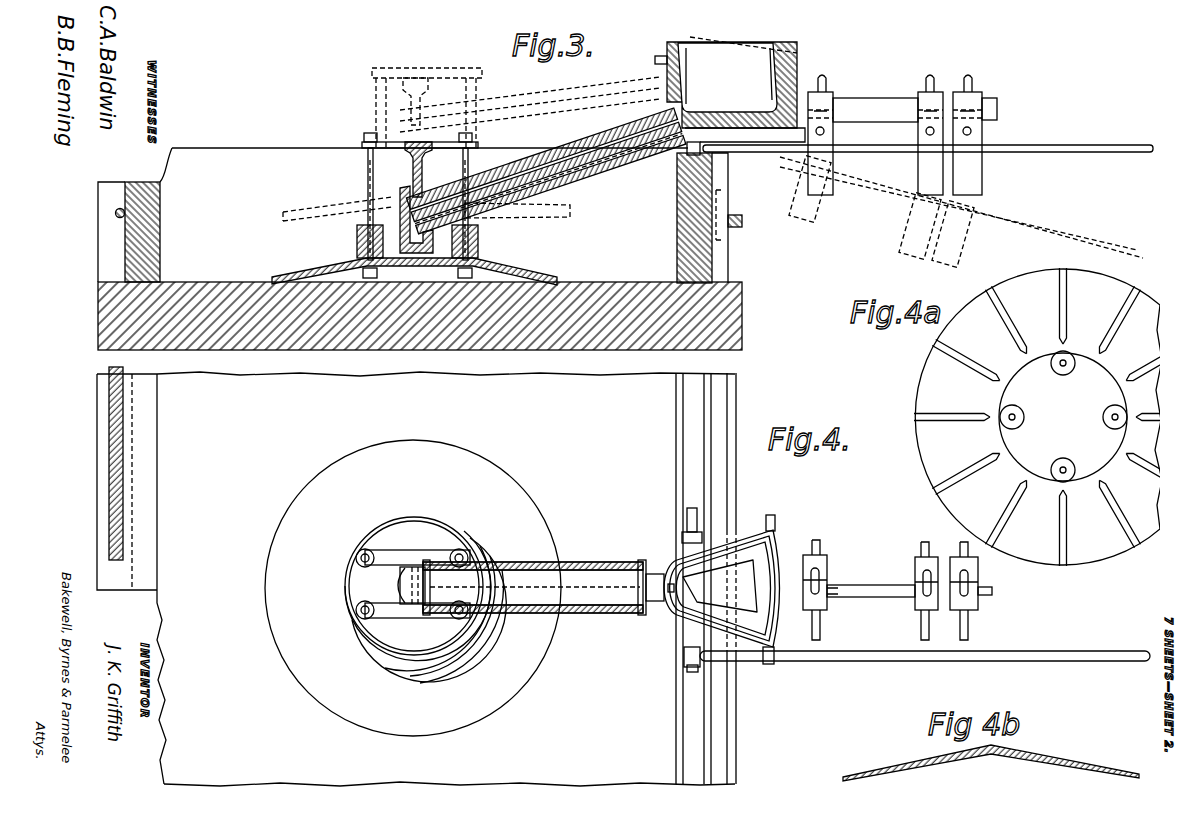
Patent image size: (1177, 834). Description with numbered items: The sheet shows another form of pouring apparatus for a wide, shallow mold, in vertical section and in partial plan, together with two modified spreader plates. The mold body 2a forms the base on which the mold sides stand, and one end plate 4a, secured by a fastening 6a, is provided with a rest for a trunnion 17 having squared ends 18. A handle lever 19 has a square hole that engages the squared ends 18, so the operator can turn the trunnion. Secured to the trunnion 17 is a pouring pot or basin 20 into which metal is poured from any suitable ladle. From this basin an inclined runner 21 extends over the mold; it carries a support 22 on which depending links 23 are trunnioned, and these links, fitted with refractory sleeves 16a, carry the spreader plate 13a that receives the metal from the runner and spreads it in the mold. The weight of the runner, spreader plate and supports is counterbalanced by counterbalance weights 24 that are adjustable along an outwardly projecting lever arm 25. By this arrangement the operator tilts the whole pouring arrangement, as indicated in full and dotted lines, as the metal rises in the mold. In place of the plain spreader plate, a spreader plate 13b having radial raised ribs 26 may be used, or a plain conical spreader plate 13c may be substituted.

In FIG. 3, the base frame 2a is at (433, 330).
In FIG. 4, the base frame 2a is at (446, 579).
In FIG. 3, the end plate 4a is at (125, 242).
In FIG. 4, the end plate 4a is at (130, 483).
In FIG. 3, the fastening screw 6a is at (116, 214).
In FIG. 4, the fastening screw 6a is at (116, 452).
In FIG. 3, the spreader plate 13a is at (512, 277).
In FIG. 4, the spreader plate 13a is at (413, 588).
In FIG. 4A, the grooved disk 13b is at (1038, 417).
In FIG. 4B, the plain conical spreader plate 13c is at (1050, 758).
In FIG. 3, the refractory sleeves 16a is at (357, 242).
In FIG. 4, the refractory sleeves 16a is at (452, 550).
In FIG. 3, the trunnion 17 is at (680, 158).
In FIG. 4, the trunnion 17 is at (688, 634).
In FIG. 3, the squared ends 18 is at (718, 158).
In FIG. 4, the squared ends 18 is at (684, 667).
In FIG. 3, the handle lever 19 is at (878, 153).
In FIG. 4, the handle lever 19 is at (889, 662).
In FIG. 3, the pouring pot or basin 20 is at (726, 85).
In FIG. 4, the pouring pot or basin 20 is at (754, 580).
In FIG. 3, the inclined runner 21 is at (590, 150).
In FIG. 4, the inclined runner 21 is at (595, 590).
In FIG. 3, the support 22 is at (422, 171).
In FIG. 4, the support 22 is at (399, 585).
In FIG. 3, the depending links 23 is at (368, 178).
In FIG. 3, the counterbalance weights 24 is at (833, 93).
In FIG. 4, the counterbalance weights 24 is at (822, 575).
In FIG. 3, the lever arm 25 is at (885, 107).
In FIG. 4, the lever arm 25 is at (872, 592).
In FIG. 4A, the radial raised ribs 26 is at (1120, 312).